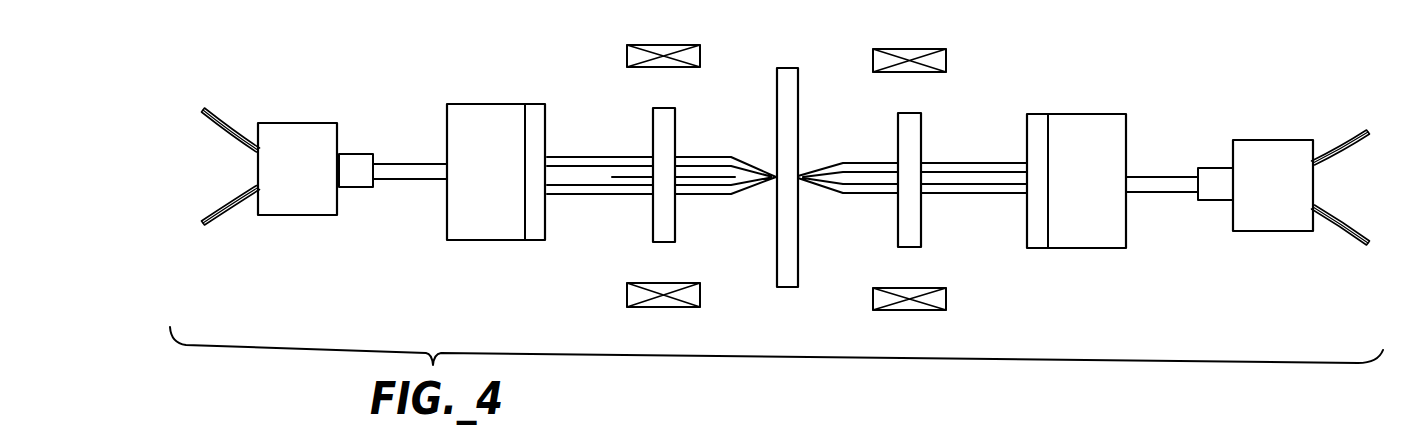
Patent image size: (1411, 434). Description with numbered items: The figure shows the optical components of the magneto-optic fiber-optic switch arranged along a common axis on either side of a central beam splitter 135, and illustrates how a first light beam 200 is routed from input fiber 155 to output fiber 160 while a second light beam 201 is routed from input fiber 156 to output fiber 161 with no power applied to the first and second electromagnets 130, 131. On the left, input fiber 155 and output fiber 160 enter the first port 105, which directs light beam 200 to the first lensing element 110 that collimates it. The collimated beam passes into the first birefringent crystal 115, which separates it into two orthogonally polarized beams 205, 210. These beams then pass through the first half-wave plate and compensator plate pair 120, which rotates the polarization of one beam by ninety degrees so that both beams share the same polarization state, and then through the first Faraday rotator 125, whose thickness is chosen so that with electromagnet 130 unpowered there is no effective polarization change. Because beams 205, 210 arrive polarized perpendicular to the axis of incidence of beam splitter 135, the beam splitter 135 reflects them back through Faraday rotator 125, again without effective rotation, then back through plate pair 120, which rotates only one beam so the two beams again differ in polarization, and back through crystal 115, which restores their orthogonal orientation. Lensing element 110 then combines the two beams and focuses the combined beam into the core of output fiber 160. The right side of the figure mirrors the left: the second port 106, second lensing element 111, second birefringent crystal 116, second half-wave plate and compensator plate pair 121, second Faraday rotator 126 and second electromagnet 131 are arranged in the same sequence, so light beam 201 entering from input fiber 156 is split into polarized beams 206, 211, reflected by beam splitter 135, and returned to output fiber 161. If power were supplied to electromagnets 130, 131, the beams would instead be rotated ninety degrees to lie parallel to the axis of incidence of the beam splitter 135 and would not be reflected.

The first port 105 is at (313, 216).
The second port 106 is at (1272, 233).
The first lensing element 110 is at (352, 155).
The second lensing element 111 is at (1227, 170).
The first birefringent crystal 115 is at (463, 242).
The second birefringent crystal 116 is at (1110, 252).
The first half-wave plate and compensator plate pair 120 is at (538, 243).
The second half-wave plate and compensator plate pair 121 is at (1035, 250).
The first Faraday rotator 125 is at (650, 228).
The second Faraday rotator 126 is at (922, 230).
The first electromagnet 130 is at (700, 55).
The second electromagnet 131 is at (947, 63).
The beam splitter 135 is at (787, 288).
The input fiber 155 is at (240, 140).
The output fiber 160 is at (232, 206).
The input fiber 156 is at (1333, 153).
The output fiber 161 is at (1343, 215).
The first light beam 200 is at (218, 113).
The second light beam 201 is at (1137, 177).
The polarized beam 205 is at (612, 175).
The polarized beam 210 is at (640, 181).
The first output light beam 206 is at (830, 162).
The second output light beam 211 is at (823, 195).